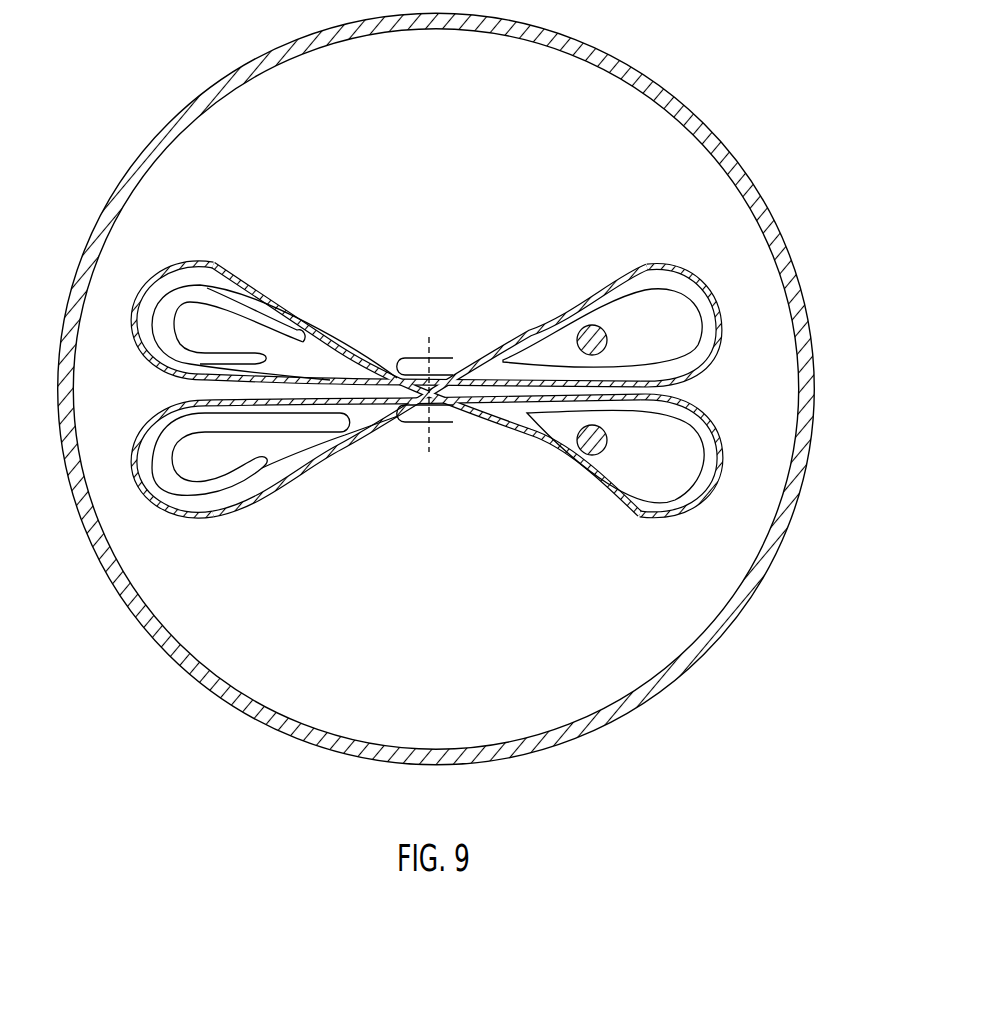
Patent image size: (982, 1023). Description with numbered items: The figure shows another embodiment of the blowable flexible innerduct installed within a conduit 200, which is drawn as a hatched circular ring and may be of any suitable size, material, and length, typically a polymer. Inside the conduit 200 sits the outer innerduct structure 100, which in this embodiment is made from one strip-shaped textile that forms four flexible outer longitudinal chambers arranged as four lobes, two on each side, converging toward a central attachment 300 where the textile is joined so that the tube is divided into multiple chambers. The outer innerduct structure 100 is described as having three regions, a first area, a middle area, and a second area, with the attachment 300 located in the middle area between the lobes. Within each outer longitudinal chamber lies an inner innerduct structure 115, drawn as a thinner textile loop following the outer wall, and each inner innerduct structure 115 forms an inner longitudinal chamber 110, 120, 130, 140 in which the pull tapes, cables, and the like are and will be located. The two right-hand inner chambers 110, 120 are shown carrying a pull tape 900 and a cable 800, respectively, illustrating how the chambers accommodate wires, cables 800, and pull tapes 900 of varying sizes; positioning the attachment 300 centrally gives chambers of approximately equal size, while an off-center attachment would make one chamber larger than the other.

The conduit 200 is at (590, 43).
The outer innerduct structure 100 is at (645, 267).
The inner longitudinal chamber 110 is at (661, 340).
The inner longitudinal chamber 120 is at (661, 474).
The inner longitudinal chamber 130 is at (226, 340).
The fourth lobe 140 is at (226, 474).
The inner innerduct structure 115 is at (148, 331).
The attachment 300 is at (426, 352).
The cables 800 is at (577, 443).
The pull tapes 900 is at (578, 346).